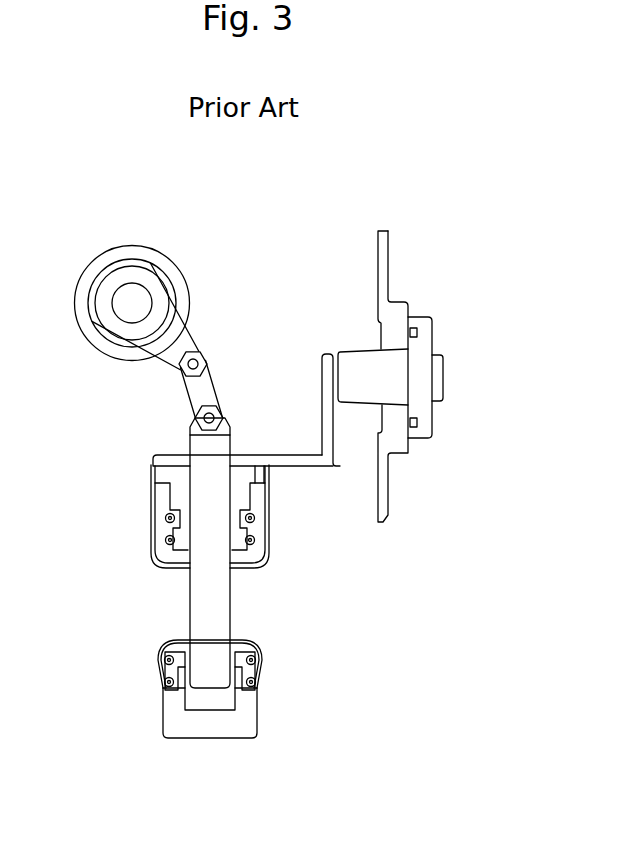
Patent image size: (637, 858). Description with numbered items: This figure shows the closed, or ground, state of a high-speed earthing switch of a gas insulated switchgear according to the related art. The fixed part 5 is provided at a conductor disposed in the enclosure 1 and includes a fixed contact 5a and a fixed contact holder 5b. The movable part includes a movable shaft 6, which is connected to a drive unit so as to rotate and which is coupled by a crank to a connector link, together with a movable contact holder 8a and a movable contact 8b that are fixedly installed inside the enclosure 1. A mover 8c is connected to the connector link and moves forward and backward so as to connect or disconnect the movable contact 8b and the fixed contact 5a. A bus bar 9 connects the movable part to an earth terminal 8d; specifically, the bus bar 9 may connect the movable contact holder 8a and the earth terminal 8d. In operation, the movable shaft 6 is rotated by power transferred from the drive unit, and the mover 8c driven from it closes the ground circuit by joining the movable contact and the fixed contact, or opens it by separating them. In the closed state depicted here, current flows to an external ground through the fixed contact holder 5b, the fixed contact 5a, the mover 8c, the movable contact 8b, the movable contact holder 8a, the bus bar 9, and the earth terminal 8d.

The enclosure 1 is at (397, 318).
The fixed part 5 is at (162, 689).
The fixed contact 5a is at (160, 662).
The fixed contact holder 5b is at (177, 707).
The movable shaft 6 is at (105, 294).
The movable contact holder 8a is at (177, 497).
The movable contact 8b is at (170, 529).
The mover 8c is at (200, 482).
The earth terminal 8d is at (336, 462).
The bus bar 9 is at (421, 357).